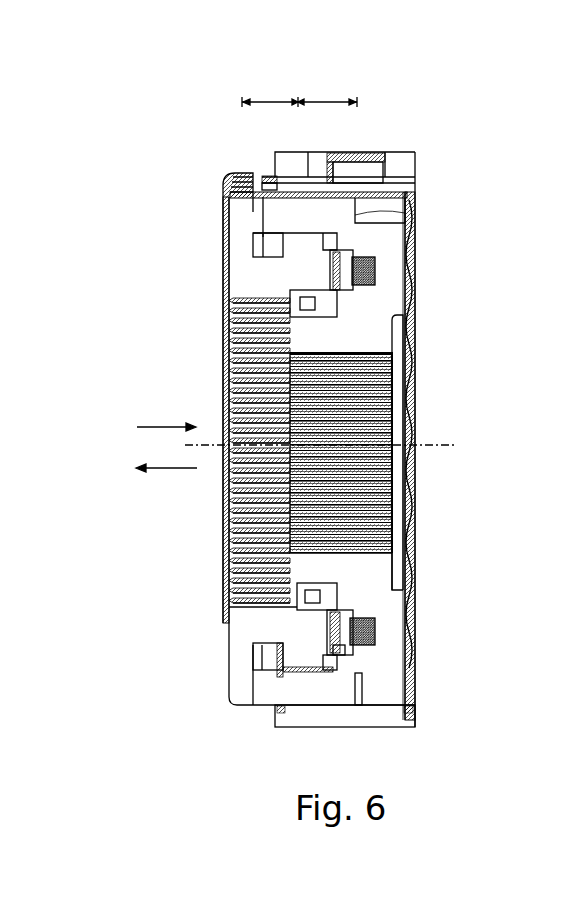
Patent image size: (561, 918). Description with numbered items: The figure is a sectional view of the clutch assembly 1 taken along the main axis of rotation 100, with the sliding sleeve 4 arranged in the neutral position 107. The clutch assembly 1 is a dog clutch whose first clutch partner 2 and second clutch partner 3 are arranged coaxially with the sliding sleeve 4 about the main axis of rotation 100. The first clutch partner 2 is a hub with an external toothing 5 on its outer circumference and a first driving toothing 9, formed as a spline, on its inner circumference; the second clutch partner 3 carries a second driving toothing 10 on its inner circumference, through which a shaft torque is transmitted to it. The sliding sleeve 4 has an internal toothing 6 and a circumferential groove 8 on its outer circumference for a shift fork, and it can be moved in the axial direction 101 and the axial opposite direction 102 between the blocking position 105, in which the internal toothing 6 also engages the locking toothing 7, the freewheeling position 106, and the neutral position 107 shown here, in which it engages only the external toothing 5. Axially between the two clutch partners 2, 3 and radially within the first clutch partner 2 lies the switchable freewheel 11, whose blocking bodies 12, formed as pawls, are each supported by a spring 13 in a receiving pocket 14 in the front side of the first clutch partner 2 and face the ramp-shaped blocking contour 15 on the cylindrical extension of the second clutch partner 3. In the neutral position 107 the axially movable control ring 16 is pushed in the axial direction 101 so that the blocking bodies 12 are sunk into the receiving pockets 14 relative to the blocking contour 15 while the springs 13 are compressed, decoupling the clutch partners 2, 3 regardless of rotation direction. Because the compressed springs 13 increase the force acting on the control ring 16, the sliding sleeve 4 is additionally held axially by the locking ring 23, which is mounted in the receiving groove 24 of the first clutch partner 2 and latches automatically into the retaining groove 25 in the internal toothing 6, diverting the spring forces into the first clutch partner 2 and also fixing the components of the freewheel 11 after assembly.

The clutch assembly 1 is at (168, 190).
The first clutch partner 2 is at (423, 684).
The second clutch partner 3 is at (227, 676).
The sliding sleeve 4 is at (398, 161).
The external toothing 5 is at (263, 178).
The internal toothing 6 is at (413, 256).
The locking toothing 7 is at (233, 174).
The circumferential groove 8 is at (347, 162).
The first driving toothing 9 is at (372, 514).
The second driving toothing 10 is at (237, 548).
The switchable freewheel 11 is at (332, 683).
The blocking bodies 12 is at (344, 648).
The spring 13 is at (378, 634).
The receiving pocket 14 is at (342, 615).
The blocking contour 15 is at (330, 624).
The control ring 16 is at (357, 676).
The locking ring 23 is at (413, 211).
The receiving groove 24 is at (413, 226).
The retaining groove 25 is at (363, 182).
The main axis of rotation 100 is at (455, 446).
The axial direction 101 is at (160, 426).
The axial opposite direction 102 is at (172, 469).
The blocking position 105 is at (258, 91).
The freewheeling position 106 is at (295, 91).
The neutral position 107 is at (336, 91).